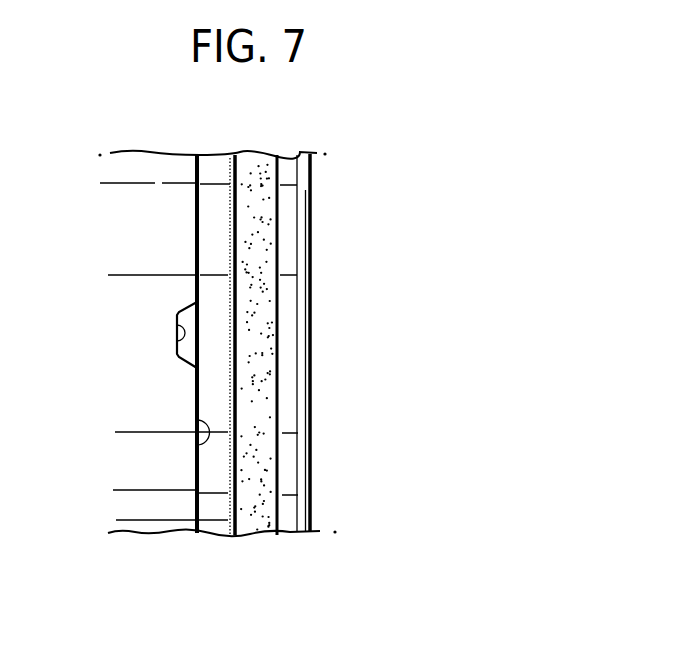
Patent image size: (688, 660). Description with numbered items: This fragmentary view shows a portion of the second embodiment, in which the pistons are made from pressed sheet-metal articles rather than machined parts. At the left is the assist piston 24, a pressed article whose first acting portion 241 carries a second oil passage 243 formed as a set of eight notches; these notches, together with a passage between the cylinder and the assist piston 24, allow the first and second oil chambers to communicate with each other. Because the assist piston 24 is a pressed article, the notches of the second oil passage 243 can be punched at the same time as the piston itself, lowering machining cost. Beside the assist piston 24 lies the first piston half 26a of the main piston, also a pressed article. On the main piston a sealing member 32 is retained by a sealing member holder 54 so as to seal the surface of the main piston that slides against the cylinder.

The assist piston 24 is at (160, 145).
The second oil passage 243 is at (176, 341).
The first acting portion 241 is at (195, 444).
The first piston half 26a is at (222, 166).
The sealing member 32 is at (258, 528).
The sealing member holder 54 is at (290, 165).